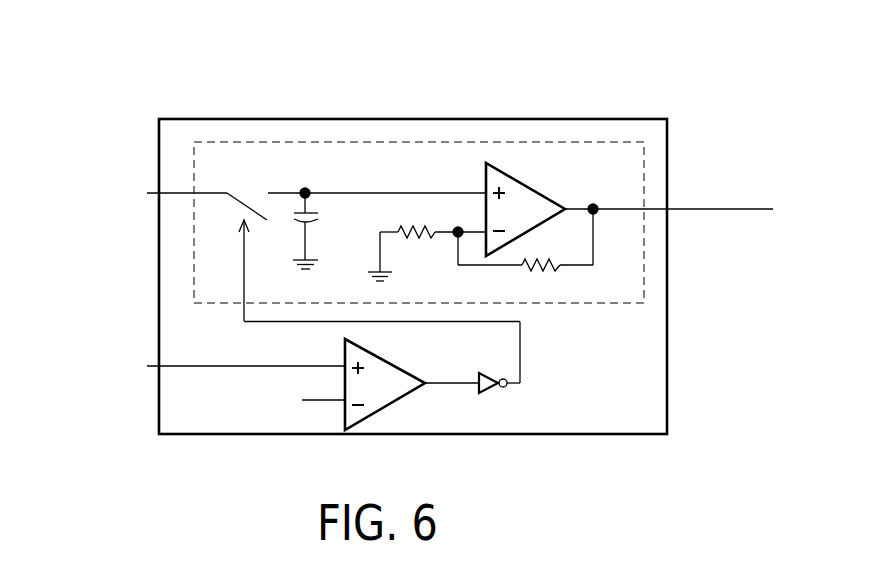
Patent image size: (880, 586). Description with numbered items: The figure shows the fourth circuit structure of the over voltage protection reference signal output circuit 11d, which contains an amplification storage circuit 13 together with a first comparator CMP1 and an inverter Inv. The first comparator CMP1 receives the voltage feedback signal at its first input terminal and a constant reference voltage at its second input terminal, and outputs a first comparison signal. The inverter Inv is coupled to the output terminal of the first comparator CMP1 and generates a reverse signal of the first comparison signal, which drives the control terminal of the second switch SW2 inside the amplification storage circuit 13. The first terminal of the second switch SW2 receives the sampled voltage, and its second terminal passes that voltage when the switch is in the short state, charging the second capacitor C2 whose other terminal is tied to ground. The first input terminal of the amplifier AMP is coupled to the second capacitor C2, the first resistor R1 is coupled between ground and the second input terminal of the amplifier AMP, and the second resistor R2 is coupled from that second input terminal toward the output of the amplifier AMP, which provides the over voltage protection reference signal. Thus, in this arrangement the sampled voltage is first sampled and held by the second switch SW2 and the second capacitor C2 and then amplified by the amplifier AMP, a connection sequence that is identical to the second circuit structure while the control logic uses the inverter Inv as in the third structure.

The over voltage protection reference signal output circuit 11d is at (590, 80).
The amplification storage circuit 13 is at (473, 142).
The second switch SW2 is at (353, 241).
The second capacitor C2 is at (322, 231).
The first resistor R1 is at (427, 253).
The second resistor R2 is at (525, 256).
The amplifier AMP is at (577, 179).
The first comparator CMP1 is at (405, 397).
The inverter Inv is at (505, 388).